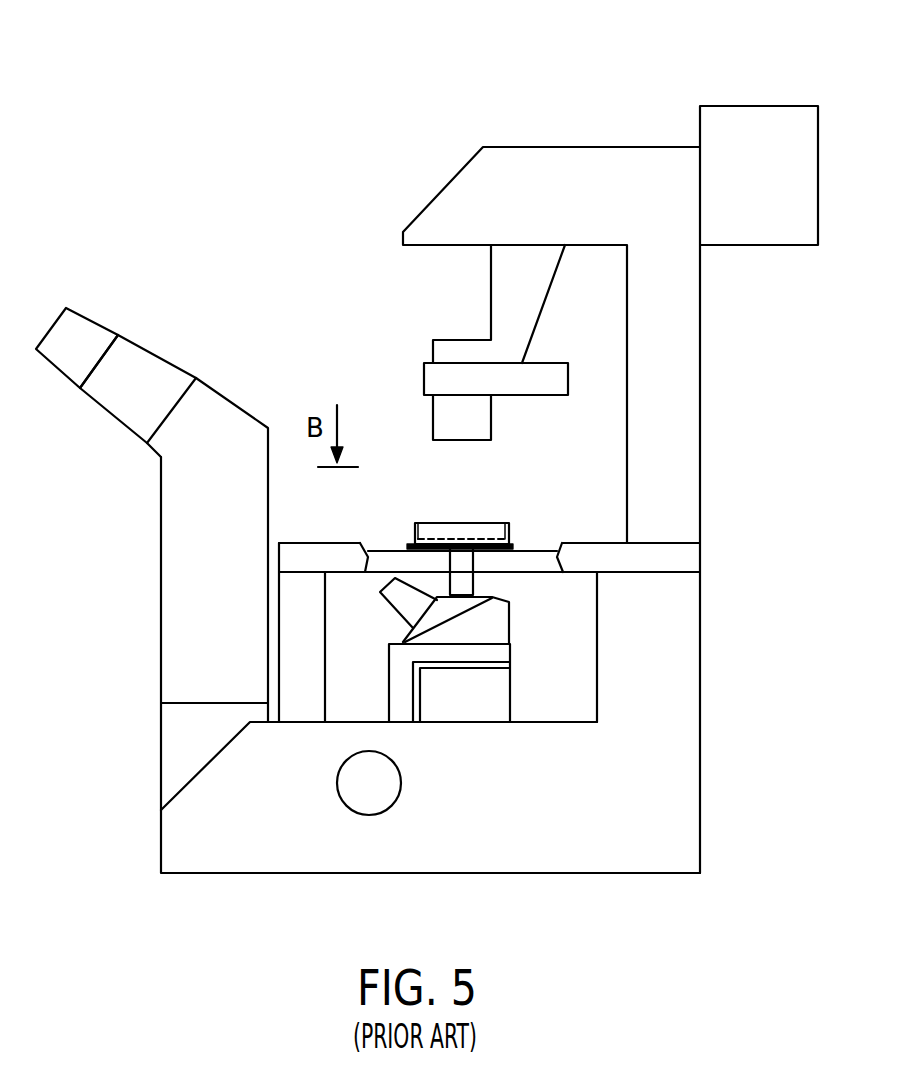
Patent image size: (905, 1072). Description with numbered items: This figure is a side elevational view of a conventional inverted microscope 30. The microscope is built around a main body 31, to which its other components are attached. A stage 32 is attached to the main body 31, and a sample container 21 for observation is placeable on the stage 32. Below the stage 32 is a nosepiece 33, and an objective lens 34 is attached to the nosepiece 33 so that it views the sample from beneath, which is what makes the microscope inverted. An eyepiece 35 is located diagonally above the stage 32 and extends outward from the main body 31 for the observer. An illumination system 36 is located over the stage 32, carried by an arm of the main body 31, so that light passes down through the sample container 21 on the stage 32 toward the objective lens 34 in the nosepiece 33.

The inverted microscope 30 is at (537, 78).
The main body 31 is at (577, 853).
The stage 32 is at (607, 553).
The nosepiece 33 is at (440, 613).
The objective lens 34 is at (460, 578).
The eyepiece 35 is at (77, 333).
The illumination system 36 is at (447, 415).
The sample container 21 is at (467, 522).